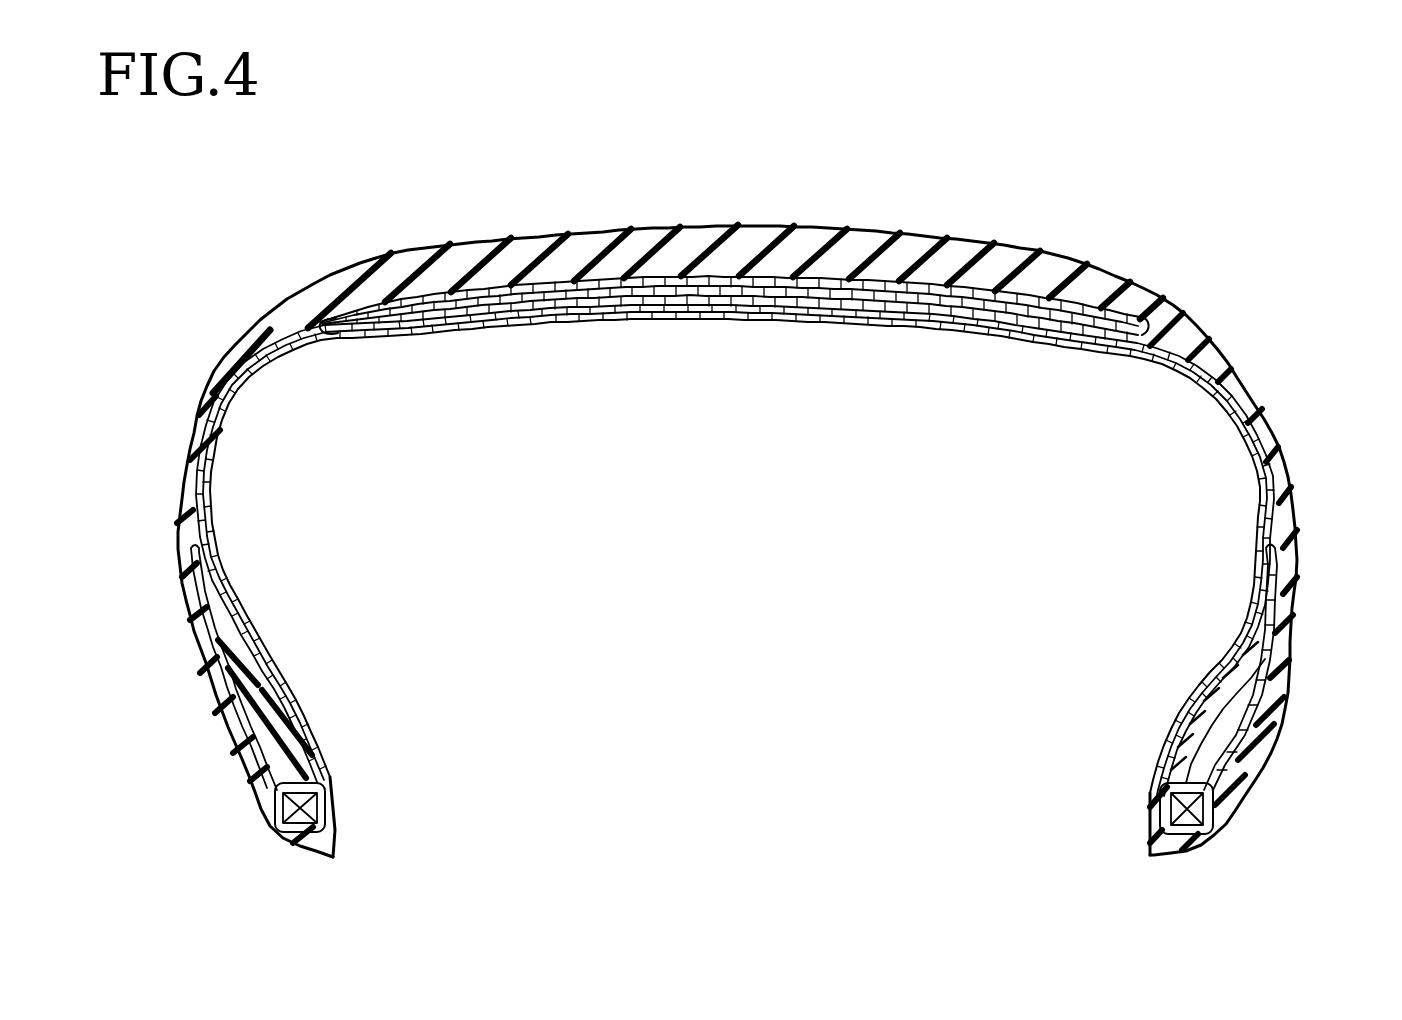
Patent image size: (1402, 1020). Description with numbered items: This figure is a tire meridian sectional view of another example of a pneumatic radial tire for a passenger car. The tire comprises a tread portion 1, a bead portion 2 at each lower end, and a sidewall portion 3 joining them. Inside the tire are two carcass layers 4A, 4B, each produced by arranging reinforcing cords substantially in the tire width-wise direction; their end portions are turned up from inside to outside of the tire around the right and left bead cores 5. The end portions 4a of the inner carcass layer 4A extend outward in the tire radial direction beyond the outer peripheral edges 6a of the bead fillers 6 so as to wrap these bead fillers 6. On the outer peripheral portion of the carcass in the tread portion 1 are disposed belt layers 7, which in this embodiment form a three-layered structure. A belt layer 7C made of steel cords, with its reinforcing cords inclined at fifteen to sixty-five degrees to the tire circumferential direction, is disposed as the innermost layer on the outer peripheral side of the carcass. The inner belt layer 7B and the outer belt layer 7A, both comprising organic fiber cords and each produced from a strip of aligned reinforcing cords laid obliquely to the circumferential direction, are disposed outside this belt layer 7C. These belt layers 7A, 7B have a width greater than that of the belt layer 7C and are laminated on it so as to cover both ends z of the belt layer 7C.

The tread portion 1 is at (918, 233).
The bead portion 2 is at (259, 799).
The sidewall portion 3 is at (178, 541).
The inner carcass layer 4A is at (310, 337).
The outer carcass layer 4B is at (260, 373).
The end portion of inner carcass layer 4a is at (197, 587).
The bead core 5 is at (312, 810).
The bead filler 6 is at (291, 743).
The outer peripheral edge of bead filler 6a is at (212, 566).
The belt layer 7 is at (685, 268).
The outer belt layer 7A is at (507, 283).
The inner belt layer 7B is at (560, 317).
The steel cord belt layer 7C is at (473, 323).
The end of belt layer 7C z is at (270, 330).